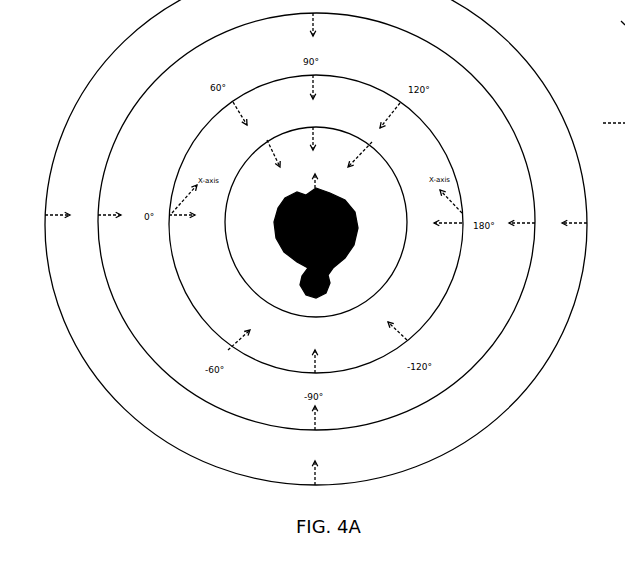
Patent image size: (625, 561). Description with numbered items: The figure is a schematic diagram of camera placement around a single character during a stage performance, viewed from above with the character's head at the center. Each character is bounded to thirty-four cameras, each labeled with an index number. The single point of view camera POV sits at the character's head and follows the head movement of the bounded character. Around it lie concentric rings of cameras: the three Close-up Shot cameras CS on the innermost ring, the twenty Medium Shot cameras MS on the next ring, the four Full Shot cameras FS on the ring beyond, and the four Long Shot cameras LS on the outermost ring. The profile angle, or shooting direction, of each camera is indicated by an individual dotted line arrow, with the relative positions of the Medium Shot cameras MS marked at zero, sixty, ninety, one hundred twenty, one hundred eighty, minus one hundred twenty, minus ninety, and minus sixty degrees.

The Close-up Shot camera CS is at (316, 229).
The Medium Shot camera MS is at (316, 230).
The Full Shot camera FS is at (316, 221).
The Long Shot camera LS is at (316, 242).
The point of view camera POV is at (308, 197).